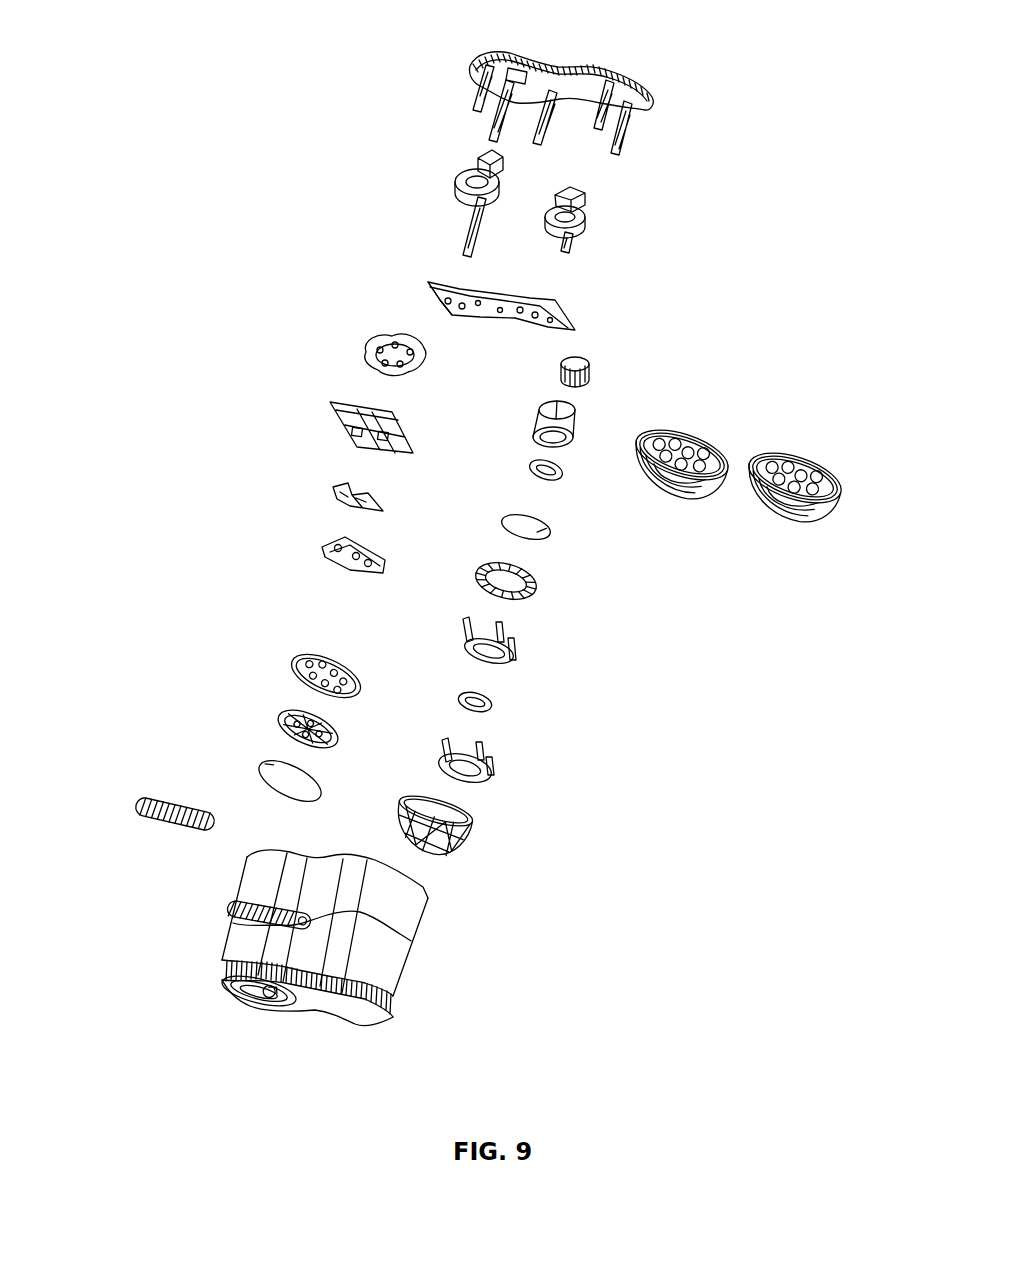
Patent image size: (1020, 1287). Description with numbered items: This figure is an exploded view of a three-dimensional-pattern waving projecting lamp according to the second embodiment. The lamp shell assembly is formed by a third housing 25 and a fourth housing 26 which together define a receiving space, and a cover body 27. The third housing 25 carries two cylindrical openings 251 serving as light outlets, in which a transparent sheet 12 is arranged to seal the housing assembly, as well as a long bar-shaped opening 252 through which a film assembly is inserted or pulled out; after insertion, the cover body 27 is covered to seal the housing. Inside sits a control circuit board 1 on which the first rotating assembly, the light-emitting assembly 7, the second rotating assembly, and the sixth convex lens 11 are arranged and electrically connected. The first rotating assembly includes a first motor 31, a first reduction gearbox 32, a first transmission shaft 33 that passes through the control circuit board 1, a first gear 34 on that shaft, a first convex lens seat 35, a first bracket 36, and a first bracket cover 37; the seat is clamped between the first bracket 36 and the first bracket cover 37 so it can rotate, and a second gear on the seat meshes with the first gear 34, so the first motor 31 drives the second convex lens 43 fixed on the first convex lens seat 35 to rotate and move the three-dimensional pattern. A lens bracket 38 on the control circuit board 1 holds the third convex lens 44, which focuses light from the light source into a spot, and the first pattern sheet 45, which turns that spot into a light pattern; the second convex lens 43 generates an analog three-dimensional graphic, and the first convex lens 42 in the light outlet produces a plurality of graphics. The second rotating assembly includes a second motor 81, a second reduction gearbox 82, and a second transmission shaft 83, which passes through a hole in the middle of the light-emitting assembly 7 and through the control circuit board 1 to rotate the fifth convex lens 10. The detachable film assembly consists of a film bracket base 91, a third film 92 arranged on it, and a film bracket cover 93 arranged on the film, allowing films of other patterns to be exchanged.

The control circuit board 1 is at (558, 318).
The light-emitting assembly 7 is at (433, 283).
The fifth convex lens 10 is at (292, 662).
The sixth convex lens 11 is at (383, 333).
The transparent sheet 12 is at (268, 770).
The third housing 25 is at (395, 972).
The fourth housing 26 is at (567, 82).
The cover body 27 is at (157, 812).
The first motor 31 is at (585, 193).
The first reduction gearbox 32 is at (587, 210).
The first transmission shaft 33 is at (580, 232).
The first gear 34 is at (587, 357).
The first convex lens seat 35 is at (537, 593).
The first bracket 36 is at (512, 648).
The first bracket cover 37 is at (492, 775).
The lens bracket 38 is at (577, 417).
The first convex lens 42 is at (702, 440).
The second convex lens 43 is at (493, 708).
The third convex lens 44 is at (562, 478).
The first pattern sheet 45 is at (550, 533).
The second motor 81 is at (477, 157).
The second reduction gearbox 82 is at (463, 173).
The second transmission shaft 83 is at (467, 230).
The film bracket base 91 is at (330, 407).
The third film 92 is at (333, 490).
The film bracket cover 93 is at (323, 547).
The cylindrical opening 251 is at (247, 997).
The long bar-shaped opening 252 is at (225, 912).